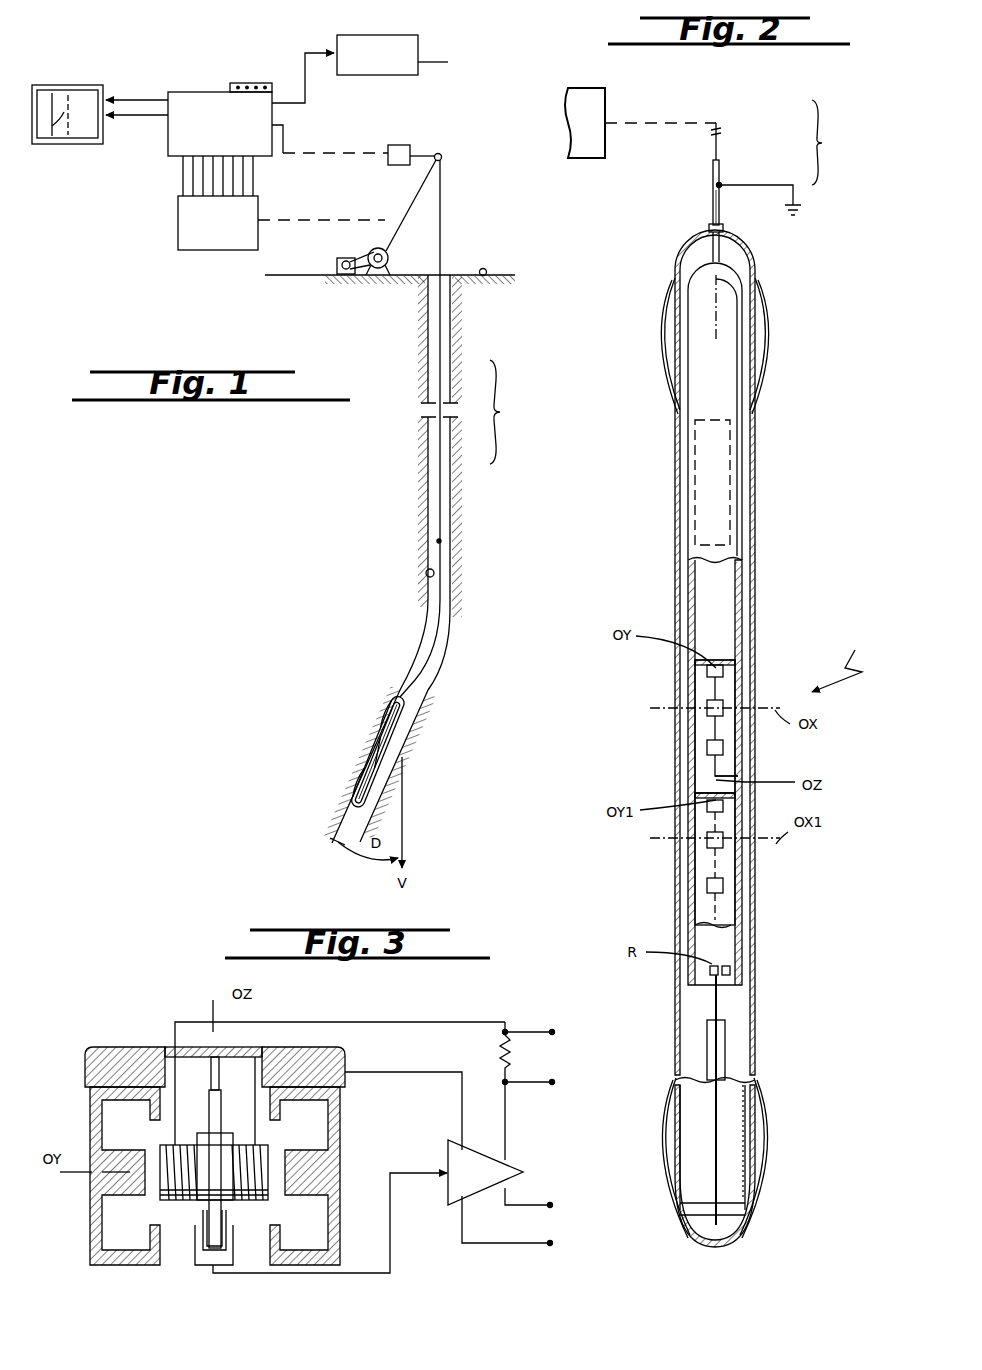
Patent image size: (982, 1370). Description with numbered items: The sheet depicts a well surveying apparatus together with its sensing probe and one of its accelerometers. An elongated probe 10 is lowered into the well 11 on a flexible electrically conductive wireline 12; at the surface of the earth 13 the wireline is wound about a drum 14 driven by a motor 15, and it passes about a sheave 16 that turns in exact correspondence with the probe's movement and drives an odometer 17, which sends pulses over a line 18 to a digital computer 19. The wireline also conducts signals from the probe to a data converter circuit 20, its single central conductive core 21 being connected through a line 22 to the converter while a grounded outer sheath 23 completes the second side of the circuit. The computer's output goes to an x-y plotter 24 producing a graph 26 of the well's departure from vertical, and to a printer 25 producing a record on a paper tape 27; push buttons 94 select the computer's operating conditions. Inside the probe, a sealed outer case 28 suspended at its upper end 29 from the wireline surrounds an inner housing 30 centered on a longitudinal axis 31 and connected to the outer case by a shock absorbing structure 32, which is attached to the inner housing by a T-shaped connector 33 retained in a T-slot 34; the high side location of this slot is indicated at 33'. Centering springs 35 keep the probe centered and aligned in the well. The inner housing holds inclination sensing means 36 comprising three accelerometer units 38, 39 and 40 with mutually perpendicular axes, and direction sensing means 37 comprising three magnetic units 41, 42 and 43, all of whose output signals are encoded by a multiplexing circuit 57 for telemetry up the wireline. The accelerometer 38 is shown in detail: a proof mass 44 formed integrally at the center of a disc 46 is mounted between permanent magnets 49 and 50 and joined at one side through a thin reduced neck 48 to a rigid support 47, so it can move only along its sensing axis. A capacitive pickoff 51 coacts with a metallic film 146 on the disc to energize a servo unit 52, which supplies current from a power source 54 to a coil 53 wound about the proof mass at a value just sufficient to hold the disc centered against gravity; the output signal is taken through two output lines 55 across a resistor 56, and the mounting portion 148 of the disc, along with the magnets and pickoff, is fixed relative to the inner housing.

In FIG. 1, the probe 10 is at (396, 696).
In FIG. 2, the probe 10 is at (837, 663).
In FIG. 1, the well 11 is at (426, 578).
In FIG. 1, the wireline 12 is at (437, 541).
In FIG. 2, the wireline 12 is at (712, 188).
In FIG. 1, the surface of the earth 13 is at (485, 276).
In FIG. 1, the drum 14 is at (381, 270).
In FIG. 1, the motor 15 is at (345, 275).
In FIG. 1, the sheave 16 is at (442, 157).
In FIG. 1, the odometer 17 is at (400, 144).
In FIG. 1, the line 18 is at (346, 151).
In FIG. 1, the digital computer 19 is at (191, 91).
In FIG. 1, the data converter circuit 20 is at (262, 217).
In FIG. 2, the data converter circuit 20 is at (608, 88).
In FIG. 2, the conductive core 21 is at (722, 148).
In FIG. 1, the line 22 is at (348, 219).
In FIG. 2, the line 22 is at (676, 122).
In FIG. 2, the outer sheath 23 is at (711, 211).
In FIG. 1, the x-y plotter 24 is at (78, 80).
In FIG. 1, the printer 25 is at (388, 34).
In FIG. 1, the graph 26 is at (64, 112).
In FIG. 1, the paper tape 27 is at (442, 61).
In FIG. 2, the outer case 28 is at (754, 766).
In FIG. 2, the upper end of probe 29 is at (725, 227).
In FIG. 2, the inner case 30 is at (744, 546).
In FIG. 1, the main longitudinal axis 31 is at (340, 826).
In FIG. 2, the main longitudinal axis 31 is at (712, 776).
In FIG. 2, the shock absorbing structure 32 is at (727, 1050).
In FIG. 2, the T-shaped connector 33 is at (762, 977).
In FIG. 1, the T-slot high side location 33' is at (345, 757).
In FIG. 2, the T-slot 34 is at (708, 971).
In FIG. 1, the centering springs 35 is at (387, 716).
In FIG. 2, the centering springs 35 is at (780, 325).
In FIG. 2, the inclination sensing means 36 is at (727, 712).
In FIG. 2, the direction sensing means 37 is at (727, 873).
In FIG. 2, the inclination responsive unit 38 is at (707, 671).
In FIG. 3, the inclination responsive unit 38 is at (92, 1030).
In FIG. 2, the inclination responsive unit 39 is at (707, 706).
In FIG. 2, the inclination responsive unit 40 is at (707, 748).
In FIG. 2, the direction sensing unit 41 is at (707, 810).
In FIG. 2, the direction sensing unit 42 is at (707, 849).
In FIG. 2, the direction sensing unit 43 is at (707, 888).
In FIG. 3, the proof mass 44 is at (162, 1150).
In FIG. 3, the disc 46 is at (221, 1128).
In FIG. 3, the rigid support 47 is at (245, 1052).
In FIG. 3, the reduced neck 48 is at (263, 1050).
In FIG. 3, the permanent magnet 49 is at (90, 1122).
In FIG. 3, the permanent magnet 50 is at (340, 1128).
In FIG. 3, the motion sensing element 51 is at (195, 1225).
In FIG. 3, the servo unit 52 is at (461, 1182).
In FIG. 3, the coil 53 is at (247, 1162).
In FIG. 3, the power source 54 is at (540, 1243).
In FIG. 3, the output lines 55 is at (546, 1080).
In FIG. 3, the resistor 56 is at (511, 1050).
In FIG. 2, the multiplexing circuit 57 is at (698, 494).
In FIG. 1, the push buttons 94 is at (244, 82).
In FIG. 3, the vapor deposited metallic film 146 is at (222, 1222).
In FIG. 3, the mounting portion 148 is at (200, 1060).